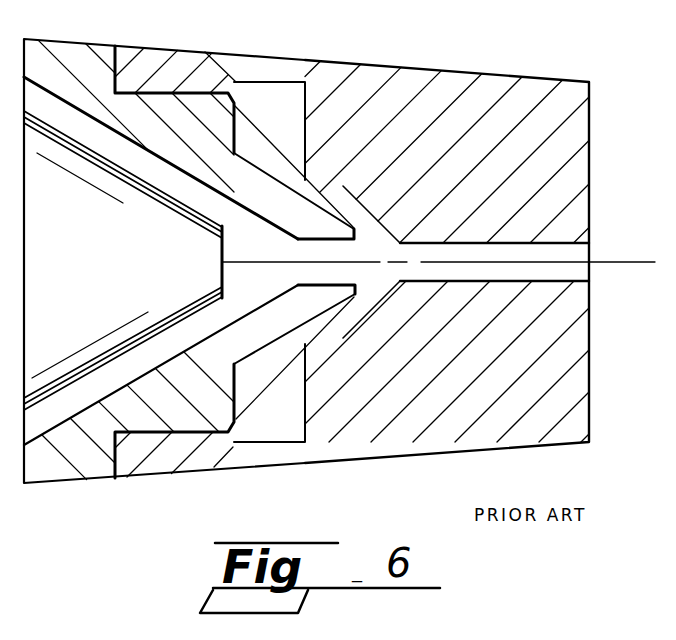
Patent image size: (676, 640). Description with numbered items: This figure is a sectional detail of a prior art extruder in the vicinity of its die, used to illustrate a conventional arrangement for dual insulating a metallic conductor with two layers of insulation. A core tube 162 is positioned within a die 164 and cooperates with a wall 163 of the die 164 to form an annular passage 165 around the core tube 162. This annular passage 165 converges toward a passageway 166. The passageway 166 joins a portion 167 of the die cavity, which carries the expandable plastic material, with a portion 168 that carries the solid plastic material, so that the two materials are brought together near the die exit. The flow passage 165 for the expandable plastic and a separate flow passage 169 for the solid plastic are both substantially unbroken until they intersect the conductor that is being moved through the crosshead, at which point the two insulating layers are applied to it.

The core tube 162 is at (132, 260).
The wall 163 is at (143, 132).
The die 164 is at (536, 78).
The annular passage 165 is at (165, 180).
The passageway 166 is at (312, 240).
The portion of die cavity for expandable plastic material 167 is at (240, 283).
The portion for solid plastic material 168 is at (372, 241).
The flow passage for solid plastic 169 is at (328, 205).